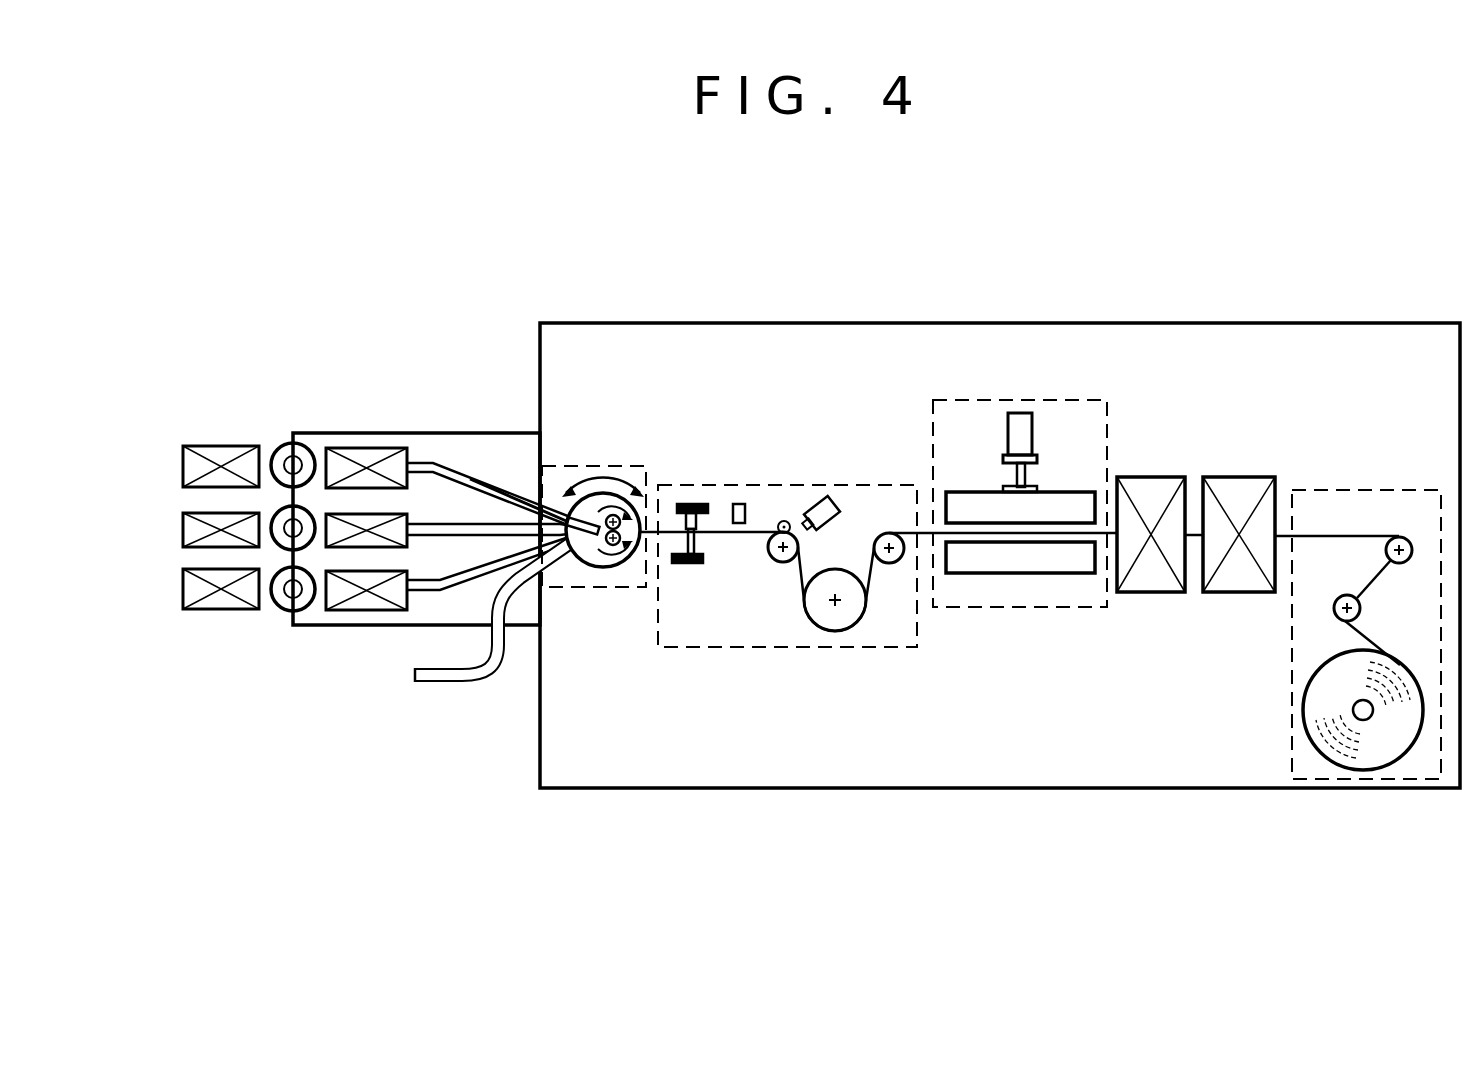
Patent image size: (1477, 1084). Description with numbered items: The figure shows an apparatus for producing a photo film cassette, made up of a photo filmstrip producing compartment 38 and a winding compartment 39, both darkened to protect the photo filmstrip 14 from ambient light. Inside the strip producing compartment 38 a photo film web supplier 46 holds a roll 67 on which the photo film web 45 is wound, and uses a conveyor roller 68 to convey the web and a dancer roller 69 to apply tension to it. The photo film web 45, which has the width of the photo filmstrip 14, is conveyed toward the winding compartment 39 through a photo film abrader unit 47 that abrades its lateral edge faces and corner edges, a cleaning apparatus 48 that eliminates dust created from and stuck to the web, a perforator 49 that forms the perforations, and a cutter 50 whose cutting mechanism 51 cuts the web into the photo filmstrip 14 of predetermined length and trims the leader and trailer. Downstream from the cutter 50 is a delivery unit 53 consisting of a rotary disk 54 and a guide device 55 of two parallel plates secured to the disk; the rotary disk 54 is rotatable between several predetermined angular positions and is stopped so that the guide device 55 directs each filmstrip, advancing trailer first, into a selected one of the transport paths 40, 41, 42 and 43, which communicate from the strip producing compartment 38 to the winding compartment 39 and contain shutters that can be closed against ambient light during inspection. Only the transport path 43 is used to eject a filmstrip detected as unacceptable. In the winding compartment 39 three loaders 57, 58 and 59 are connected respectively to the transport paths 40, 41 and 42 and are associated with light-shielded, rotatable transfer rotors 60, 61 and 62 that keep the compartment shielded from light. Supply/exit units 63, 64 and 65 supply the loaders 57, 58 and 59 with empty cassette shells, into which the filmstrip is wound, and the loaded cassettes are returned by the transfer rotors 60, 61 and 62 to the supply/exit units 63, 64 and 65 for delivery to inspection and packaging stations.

The photo filmstrip 14 is at (485, 478).
The photo filmstrip producing compartment 38 is at (913, 311).
The winding compartment 39 is at (421, 423).
The transport path 40 is at (512, 490).
The transport path 41 is at (548, 526).
The transport path 42 is at (555, 557).
The transport path 43 is at (480, 681).
The photo film web 45 is at (873, 563).
The photo film web supplier 46 is at (1283, 730).
The photo film abrader unit 47 is at (1239, 466).
The cleaning apparatus 48 is at (1160, 607).
The perforator 49 is at (1030, 610).
The cutter 50 is at (778, 652).
The cutting mechanism 51 is at (690, 503).
The delivery unit 53 is at (614, 462).
The rotary disk 54 is at (647, 559).
The guide device 55 is at (600, 558).
The loader 57 is at (365, 450).
The loader 58 is at (373, 544).
The loader 59 is at (365, 603).
The transfer rotor 60 is at (277, 444).
The transfer rotor 61 is at (272, 543).
The transfer rotor 62 is at (285, 612).
The supply/exit unit 63 is at (181, 457).
The supply/exit unit 64 is at (181, 527).
The supply/exit unit 65 is at (222, 612).
The roll 67 is at (1320, 681).
The conveyor roller 68 is at (1400, 537).
The dancer roller 69 is at (1362, 608).